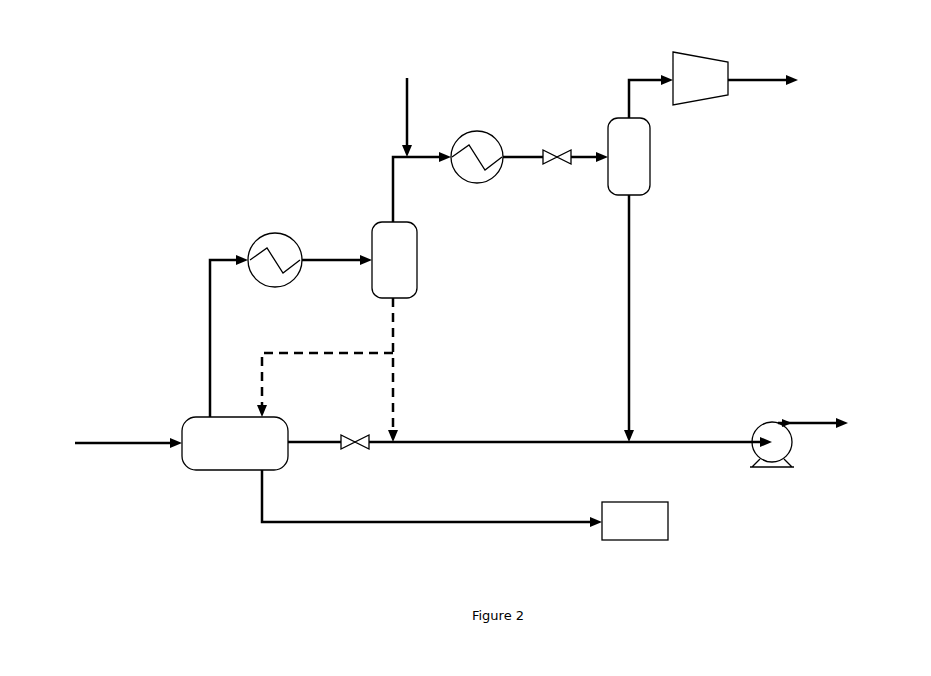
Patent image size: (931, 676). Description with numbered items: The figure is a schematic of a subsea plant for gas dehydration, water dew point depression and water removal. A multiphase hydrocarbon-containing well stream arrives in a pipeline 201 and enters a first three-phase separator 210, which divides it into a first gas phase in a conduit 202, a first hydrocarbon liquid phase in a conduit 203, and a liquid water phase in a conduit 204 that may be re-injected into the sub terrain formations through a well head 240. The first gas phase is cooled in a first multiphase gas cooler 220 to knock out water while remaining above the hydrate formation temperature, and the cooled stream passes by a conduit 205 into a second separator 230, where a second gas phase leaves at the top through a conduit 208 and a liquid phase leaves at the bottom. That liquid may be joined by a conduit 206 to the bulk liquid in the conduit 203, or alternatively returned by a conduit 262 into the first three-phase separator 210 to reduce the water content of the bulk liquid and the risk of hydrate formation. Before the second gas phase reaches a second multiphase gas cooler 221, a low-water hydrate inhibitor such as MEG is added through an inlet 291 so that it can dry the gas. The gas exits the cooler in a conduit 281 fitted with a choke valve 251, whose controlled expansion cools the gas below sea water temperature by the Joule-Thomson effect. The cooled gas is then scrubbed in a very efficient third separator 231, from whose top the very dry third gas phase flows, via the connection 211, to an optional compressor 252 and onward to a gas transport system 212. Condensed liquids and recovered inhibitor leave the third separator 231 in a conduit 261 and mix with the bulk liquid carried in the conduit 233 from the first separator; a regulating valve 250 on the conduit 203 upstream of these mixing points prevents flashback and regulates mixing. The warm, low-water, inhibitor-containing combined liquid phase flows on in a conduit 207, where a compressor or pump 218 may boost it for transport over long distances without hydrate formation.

The pipeline 201 is at (118, 442).
The first three-phase separator 210 is at (235, 443).
The conduit 202 is at (208, 347).
The first multiphase gas cooler 220 is at (273, 234).
The conduit 205 is at (338, 256).
The second separator 230 is at (394, 260).
The conduit 208 is at (393, 190).
The inlet 291 is at (405, 117).
The second multiphase gas cooler 221 is at (463, 130).
The conduit 281 is at (522, 153).
The choke valve 251 is at (558, 148).
The third separator 231 is at (629, 156).
The vapor stream to compressor 211 is at (640, 75).
The compressor 252 is at (700, 78).
The gas transport system 212 is at (762, 77).
The conduit 261 is at (628, 293).
The conduit 203 is at (300, 446).
The regulating valve 250 is at (357, 451).
The conduit 233 is at (575, 440).
The conduit 206 is at (397, 383).
The conduit 262 is at (363, 356).
The conduit 204 is at (392, 522).
The well head 240 is at (635, 521).
The pump 218 is at (793, 448).
The conduit 207 is at (810, 422).